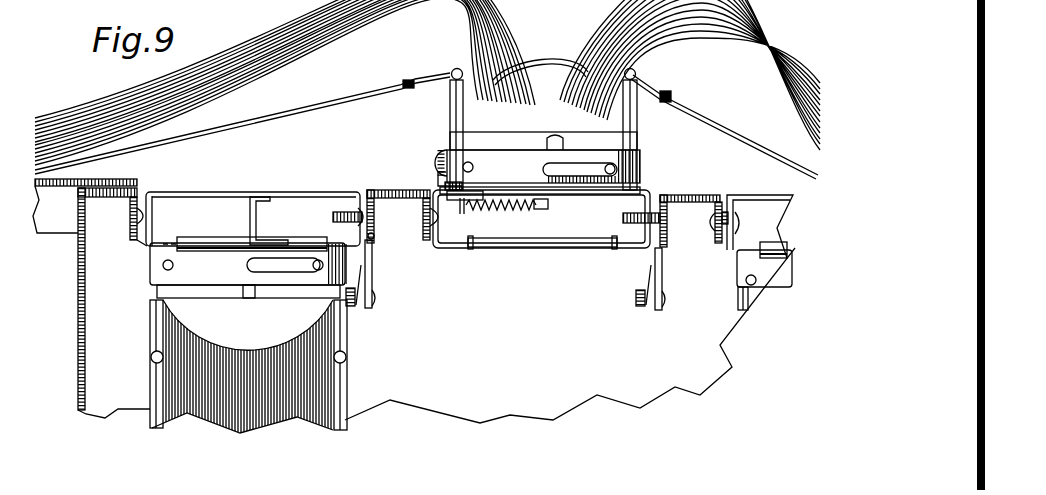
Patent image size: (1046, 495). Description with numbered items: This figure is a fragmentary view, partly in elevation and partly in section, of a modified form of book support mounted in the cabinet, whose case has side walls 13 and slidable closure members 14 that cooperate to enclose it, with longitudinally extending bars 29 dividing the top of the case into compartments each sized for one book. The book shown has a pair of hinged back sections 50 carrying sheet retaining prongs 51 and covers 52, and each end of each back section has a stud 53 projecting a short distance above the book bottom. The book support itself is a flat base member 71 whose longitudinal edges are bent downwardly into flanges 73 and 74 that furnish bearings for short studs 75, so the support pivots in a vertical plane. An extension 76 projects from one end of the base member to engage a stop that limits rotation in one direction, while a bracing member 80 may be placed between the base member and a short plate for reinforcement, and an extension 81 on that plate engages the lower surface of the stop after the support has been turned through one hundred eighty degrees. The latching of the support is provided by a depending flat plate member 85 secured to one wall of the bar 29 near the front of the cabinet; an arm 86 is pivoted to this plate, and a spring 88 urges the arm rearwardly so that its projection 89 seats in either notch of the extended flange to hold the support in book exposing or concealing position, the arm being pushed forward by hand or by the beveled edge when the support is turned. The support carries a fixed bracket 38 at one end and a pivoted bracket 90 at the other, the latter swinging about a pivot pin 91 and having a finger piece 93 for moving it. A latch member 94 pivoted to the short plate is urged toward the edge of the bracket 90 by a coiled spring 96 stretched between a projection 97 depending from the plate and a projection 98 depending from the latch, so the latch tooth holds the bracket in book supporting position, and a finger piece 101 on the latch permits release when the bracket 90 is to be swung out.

The side wall 13 is at (78, 350).
The slidable closure member 14 is at (51, 188).
The longitudinally extending bar 29 is at (386, 191).
The fixed bracket 38 is at (224, 272).
The hinged back section 50 is at (616, 144).
The sheet retaining prong 51 is at (549, 58).
The cover 52 is at (712, 128).
The stud 53 is at (462, 160).
The base member 71 is at (297, 193).
The flange 73 is at (149, 243).
The flange 74 is at (375, 240).
The stud 75 is at (134, 217).
The extension 76 is at (543, 249).
The bracing member 80 is at (248, 215).
The extension 81 is at (206, 247).
The depending flat plate member 85 is at (367, 296).
The arm 86 is at (370, 281).
The spring 88 is at (650, 273).
The projection 89 is at (334, 216).
The pivoted bracket 90 is at (529, 160).
The pivot pin 91 is at (634, 185).
The finger piece 93 is at (446, 158).
The latch member 94 is at (441, 184).
The coiled spring 96 is at (501, 218).
The projection 97 is at (542, 210).
The projection 98 is at (466, 212).
The finger piece 101 is at (438, 173).